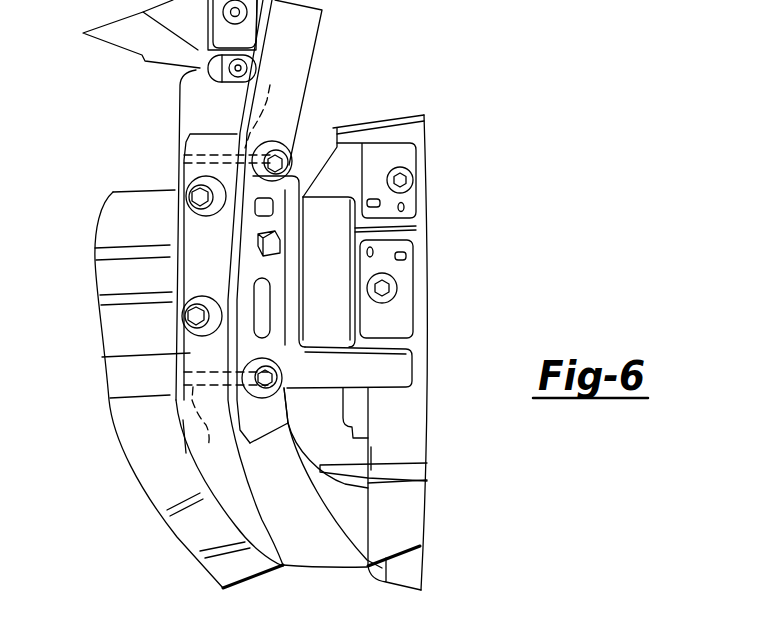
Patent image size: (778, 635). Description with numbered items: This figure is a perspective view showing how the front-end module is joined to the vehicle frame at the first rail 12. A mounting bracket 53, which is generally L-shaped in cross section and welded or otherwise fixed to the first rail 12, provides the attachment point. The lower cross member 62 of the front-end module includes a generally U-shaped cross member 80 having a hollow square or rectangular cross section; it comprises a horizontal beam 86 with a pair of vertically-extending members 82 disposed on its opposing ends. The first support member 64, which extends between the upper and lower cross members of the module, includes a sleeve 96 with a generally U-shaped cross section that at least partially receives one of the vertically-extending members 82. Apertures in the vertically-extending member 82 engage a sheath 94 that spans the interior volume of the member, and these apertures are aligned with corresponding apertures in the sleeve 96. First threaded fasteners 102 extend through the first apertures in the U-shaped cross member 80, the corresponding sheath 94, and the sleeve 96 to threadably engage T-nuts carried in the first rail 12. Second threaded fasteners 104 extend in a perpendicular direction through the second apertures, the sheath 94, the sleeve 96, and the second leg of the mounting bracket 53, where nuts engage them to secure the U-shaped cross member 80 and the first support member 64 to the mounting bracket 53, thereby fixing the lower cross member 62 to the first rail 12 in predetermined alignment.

The first rail 12 is at (122, 208).
The mounting bracket 53 is at (178, 174).
The lower cross member 62 is at (401, 582).
The first support member 64 is at (300, 52).
The U-shaped cross member 80 is at (236, 522).
The vertically-extending member 82 is at (190, 353).
The horizontal beam 86 is at (357, 568).
The sheath 94 is at (236, 265).
The sleeve 96 is at (183, 120).
The first threaded fastener 102 is at (193, 207).
The second threaded fastener 104 is at (278, 161).